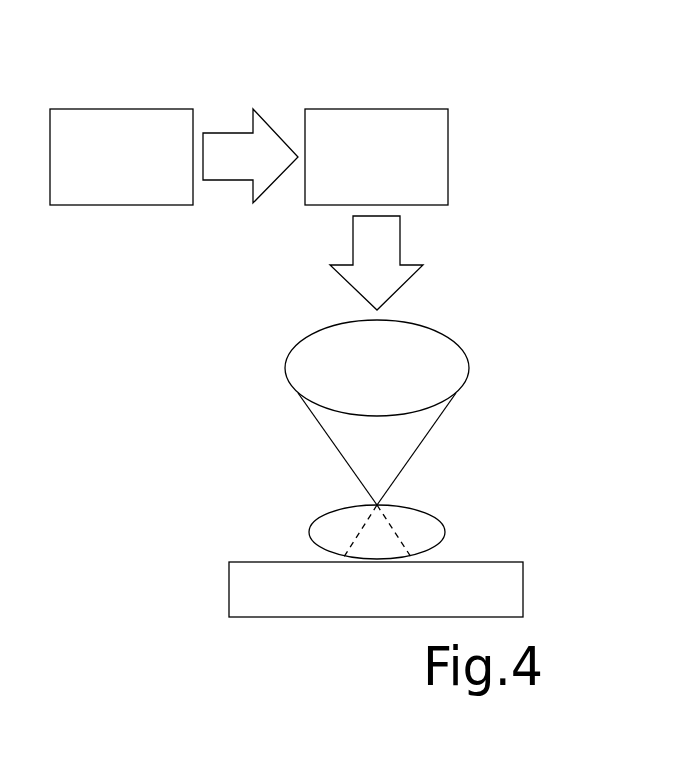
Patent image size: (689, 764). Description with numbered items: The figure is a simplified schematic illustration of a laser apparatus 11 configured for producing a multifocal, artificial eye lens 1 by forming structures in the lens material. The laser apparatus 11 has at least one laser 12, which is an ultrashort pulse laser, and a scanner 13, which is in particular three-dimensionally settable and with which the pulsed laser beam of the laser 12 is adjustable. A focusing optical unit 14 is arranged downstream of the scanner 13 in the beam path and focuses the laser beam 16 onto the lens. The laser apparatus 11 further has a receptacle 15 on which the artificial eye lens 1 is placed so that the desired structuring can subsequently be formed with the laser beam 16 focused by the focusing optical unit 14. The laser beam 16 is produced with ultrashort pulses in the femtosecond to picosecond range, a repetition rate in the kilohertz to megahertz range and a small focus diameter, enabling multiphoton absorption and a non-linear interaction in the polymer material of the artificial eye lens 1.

The laser apparatus 11 is at (222, 83).
The laser 12 is at (118, 120).
The scanner 13 is at (372, 120).
The focusing optical unit 14 is at (440, 343).
The receptacle 15 is at (512, 582).
The laser beam 16 is at (233, 172).
The artificial eye lens 1 is at (433, 517).